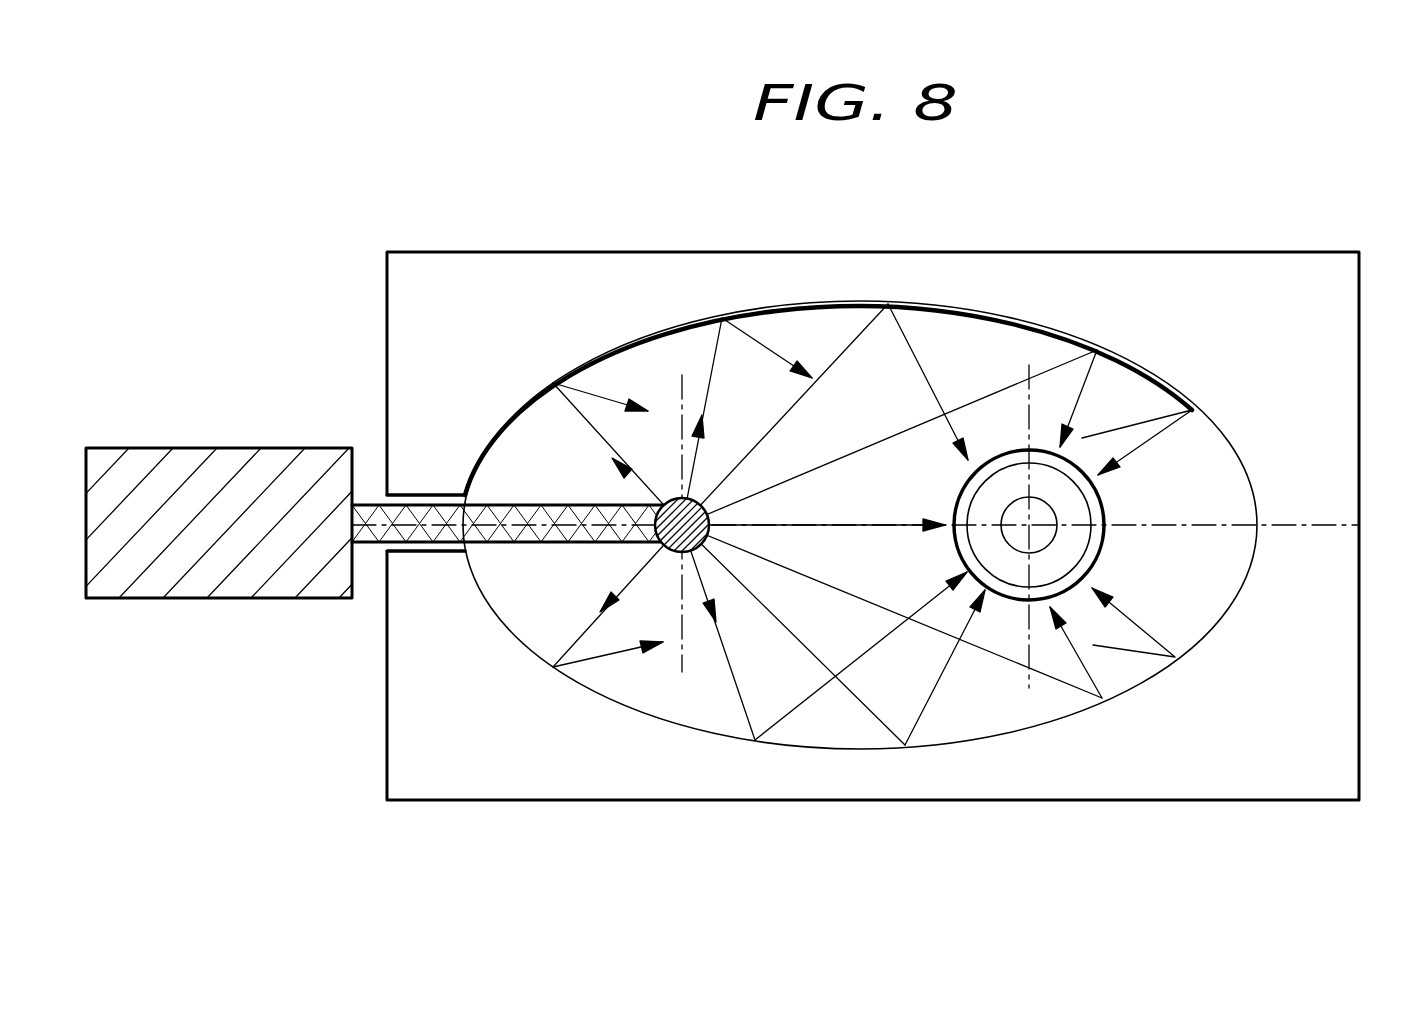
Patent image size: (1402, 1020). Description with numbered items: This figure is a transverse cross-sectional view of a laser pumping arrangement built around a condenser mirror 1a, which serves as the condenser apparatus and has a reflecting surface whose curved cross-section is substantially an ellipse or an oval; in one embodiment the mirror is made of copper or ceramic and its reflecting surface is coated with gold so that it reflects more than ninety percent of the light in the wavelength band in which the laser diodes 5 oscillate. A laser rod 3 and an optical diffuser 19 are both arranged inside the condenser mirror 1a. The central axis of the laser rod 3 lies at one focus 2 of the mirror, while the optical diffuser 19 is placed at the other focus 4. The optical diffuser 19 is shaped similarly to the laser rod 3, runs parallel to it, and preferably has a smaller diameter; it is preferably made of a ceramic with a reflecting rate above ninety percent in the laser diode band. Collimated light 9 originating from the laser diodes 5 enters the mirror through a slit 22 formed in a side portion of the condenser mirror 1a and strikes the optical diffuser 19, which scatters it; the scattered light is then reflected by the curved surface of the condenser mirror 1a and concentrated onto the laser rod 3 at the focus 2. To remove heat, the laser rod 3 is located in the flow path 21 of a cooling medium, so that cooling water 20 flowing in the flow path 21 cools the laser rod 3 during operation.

The condenser mirror 1a is at (945, 303).
The focus 2 is at (1072, 600).
The laser rod 3 is at (1043, 513).
The focus 4 is at (662, 546).
The laser diodes 5 is at (213, 562).
The collimated light 9 is at (372, 497).
The optical diffuser 19 is at (547, 403).
The cooling water 20 is at (1067, 543).
The flow path 21 is at (1077, 463).
The slit 22 is at (425, 553).